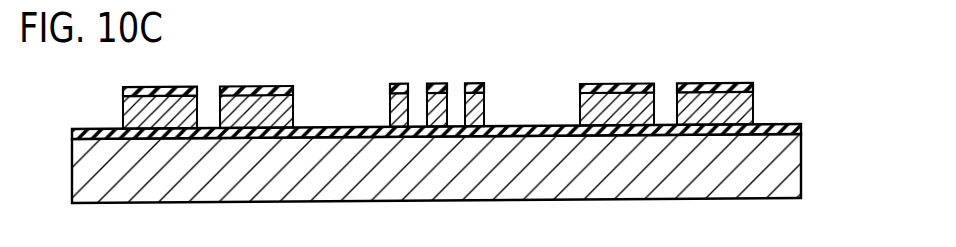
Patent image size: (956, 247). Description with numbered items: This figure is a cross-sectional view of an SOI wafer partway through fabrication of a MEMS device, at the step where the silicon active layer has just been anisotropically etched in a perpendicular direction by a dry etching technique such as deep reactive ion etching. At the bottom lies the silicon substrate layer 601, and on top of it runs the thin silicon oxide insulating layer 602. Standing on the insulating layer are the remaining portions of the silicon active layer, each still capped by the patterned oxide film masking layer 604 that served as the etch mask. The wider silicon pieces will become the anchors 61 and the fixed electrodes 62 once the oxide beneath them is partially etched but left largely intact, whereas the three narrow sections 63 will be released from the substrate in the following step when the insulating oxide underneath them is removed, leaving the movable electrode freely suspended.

The silicon substrate layer 601 is at (604, 192).
The silicon oxide insulating layer 602 is at (787, 128).
The anchors 61 is at (130, 110).
The fixed electrodes 62 is at (293, 108).
The narrow sections of silicon active layer 63 is at (391, 106).
The oxide film masking layer 604 is at (693, 83).